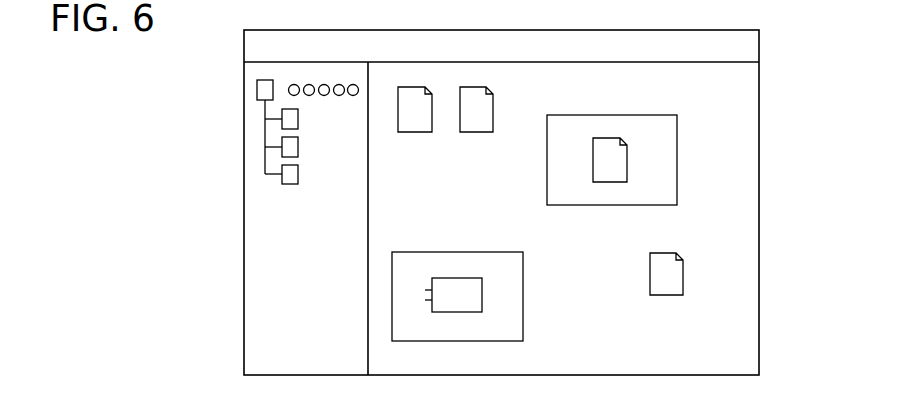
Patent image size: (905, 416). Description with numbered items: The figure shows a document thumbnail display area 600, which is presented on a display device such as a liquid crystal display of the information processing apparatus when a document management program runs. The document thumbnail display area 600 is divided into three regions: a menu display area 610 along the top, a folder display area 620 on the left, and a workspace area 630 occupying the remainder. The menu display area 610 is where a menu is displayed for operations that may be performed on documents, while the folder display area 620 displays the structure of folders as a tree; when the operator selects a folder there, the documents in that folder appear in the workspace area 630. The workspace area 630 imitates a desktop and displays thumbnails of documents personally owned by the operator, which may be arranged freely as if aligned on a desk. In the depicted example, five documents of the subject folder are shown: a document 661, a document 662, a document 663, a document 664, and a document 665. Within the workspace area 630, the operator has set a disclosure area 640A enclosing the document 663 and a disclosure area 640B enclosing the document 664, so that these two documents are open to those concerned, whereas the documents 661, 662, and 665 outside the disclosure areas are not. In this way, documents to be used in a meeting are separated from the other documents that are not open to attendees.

The document thumbnail display area 600 is at (766, 50).
The menu display area 610 is at (249, 44).
The folder display area 620 is at (250, 139).
The workspace area 630 is at (748, 130).
The disclosure area 640A is at (607, 206).
The disclosure area 640B is at (456, 334).
The document 661 is at (416, 133).
The document 662 is at (478, 133).
The document 663 is at (610, 139).
The document 664 is at (457, 279).
The document 665 is at (666, 296).